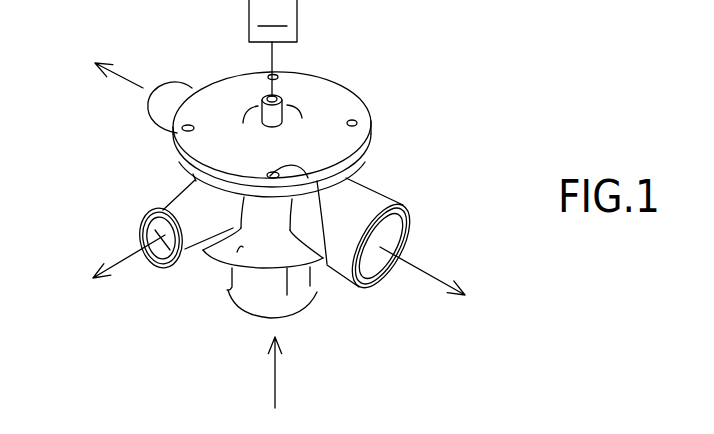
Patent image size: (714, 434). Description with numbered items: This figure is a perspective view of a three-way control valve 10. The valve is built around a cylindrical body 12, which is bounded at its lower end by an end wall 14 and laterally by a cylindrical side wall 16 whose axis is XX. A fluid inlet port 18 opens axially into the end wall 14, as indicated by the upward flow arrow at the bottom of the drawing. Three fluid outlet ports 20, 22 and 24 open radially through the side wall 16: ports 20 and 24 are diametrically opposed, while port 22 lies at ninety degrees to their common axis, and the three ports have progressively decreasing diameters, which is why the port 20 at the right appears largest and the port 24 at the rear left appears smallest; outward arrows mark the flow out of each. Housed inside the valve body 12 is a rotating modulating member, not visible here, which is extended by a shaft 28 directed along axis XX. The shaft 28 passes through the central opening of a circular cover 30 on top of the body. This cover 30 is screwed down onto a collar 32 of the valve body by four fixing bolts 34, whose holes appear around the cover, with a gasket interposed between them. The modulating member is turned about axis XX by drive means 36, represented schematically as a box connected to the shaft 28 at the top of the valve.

The control valve 10 is at (360, 76).
The cylindrical body 12 is at (203, 266).
The end wall 14 is at (297, 316).
The cylindrical side wall 16 is at (240, 250).
The fluid inlet port 18 is at (260, 307).
The fluid outlet port 20 is at (362, 202).
The fluid outlet port 22 is at (157, 209).
The fluid outlet port 24 is at (170, 93).
The shaft 28 is at (285, 98).
The circular cover 30 is at (343, 108).
The collar 32 is at (367, 170).
The fixing bolts 34 is at (267, 77).
The drive means 36 is at (273, 48).